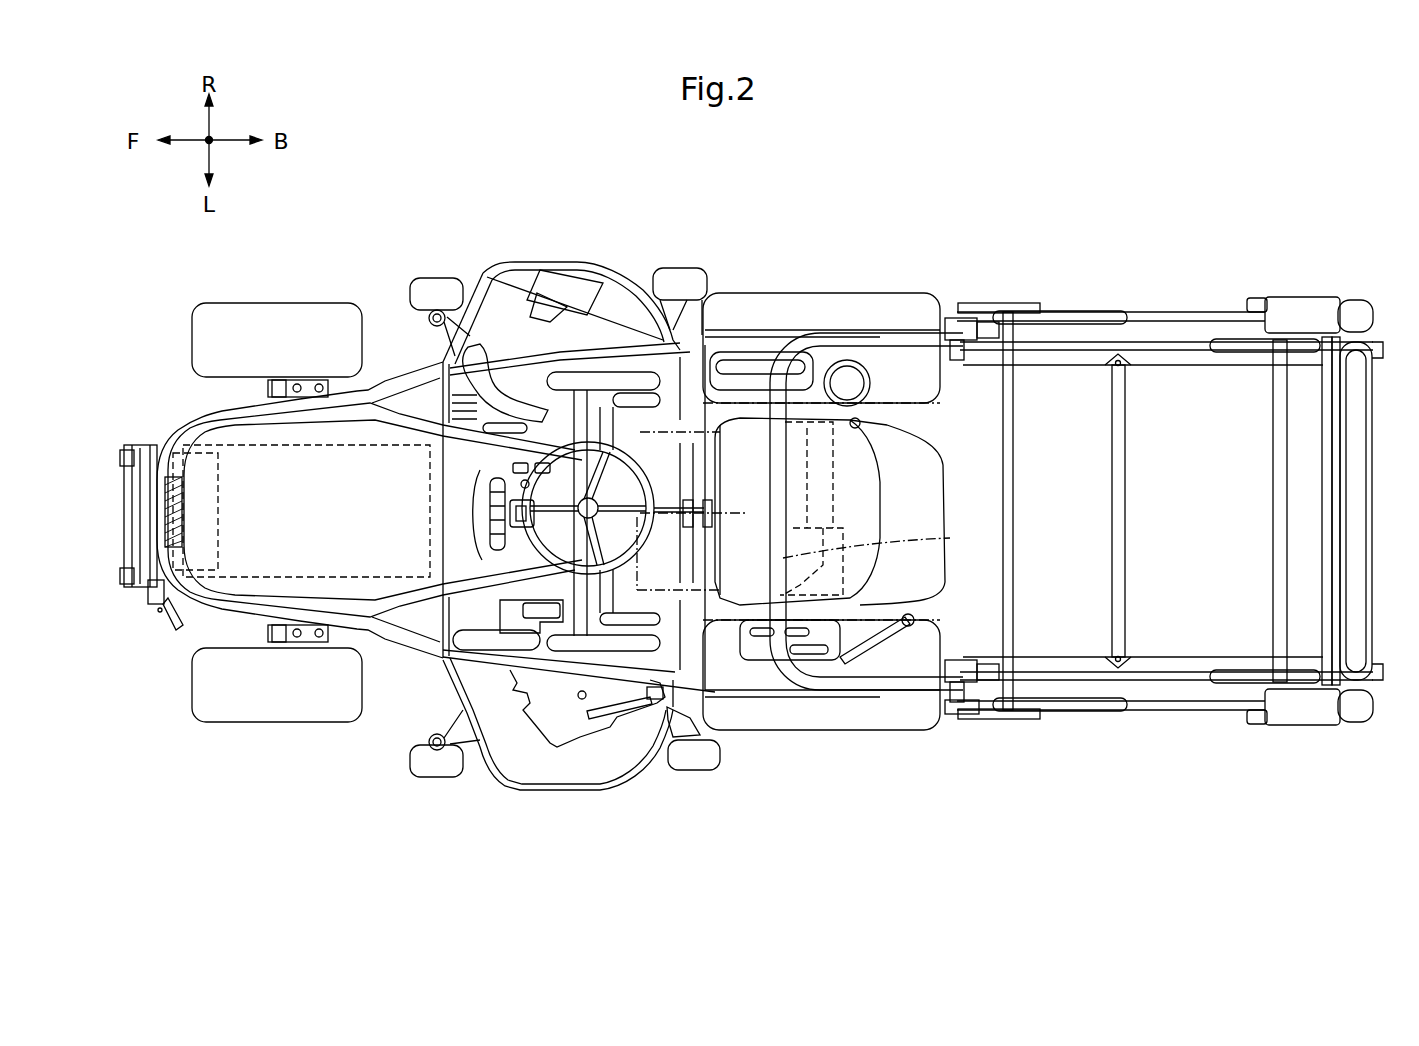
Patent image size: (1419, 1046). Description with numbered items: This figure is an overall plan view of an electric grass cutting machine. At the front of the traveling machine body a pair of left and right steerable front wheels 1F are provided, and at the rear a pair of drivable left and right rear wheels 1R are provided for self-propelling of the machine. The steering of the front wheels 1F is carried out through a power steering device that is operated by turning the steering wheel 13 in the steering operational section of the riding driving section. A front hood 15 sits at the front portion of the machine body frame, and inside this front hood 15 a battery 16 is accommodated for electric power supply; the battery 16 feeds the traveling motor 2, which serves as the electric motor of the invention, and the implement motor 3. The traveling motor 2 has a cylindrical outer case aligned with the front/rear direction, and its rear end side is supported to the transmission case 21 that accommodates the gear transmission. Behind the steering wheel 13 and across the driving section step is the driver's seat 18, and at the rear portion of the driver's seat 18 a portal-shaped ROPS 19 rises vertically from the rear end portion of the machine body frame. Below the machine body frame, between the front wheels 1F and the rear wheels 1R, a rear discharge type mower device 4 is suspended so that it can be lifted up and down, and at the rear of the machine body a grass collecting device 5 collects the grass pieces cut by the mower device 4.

The front wheels 1F is at (283, 312).
The rear wheels 1R is at (823, 305).
The traveling motor 2 is at (730, 508).
The implement motor 3 is at (222, 519).
The mower device 4 is at (563, 772).
The grass collecting device 5 is at (1158, 722).
The steering wheel 13 is at (653, 547).
The front hood 15 is at (250, 437).
The battery 16 is at (222, 598).
The driver's seat 18 is at (930, 476).
The ROPS 19 is at (908, 333).
The transmission case 21 is at (950, 538).